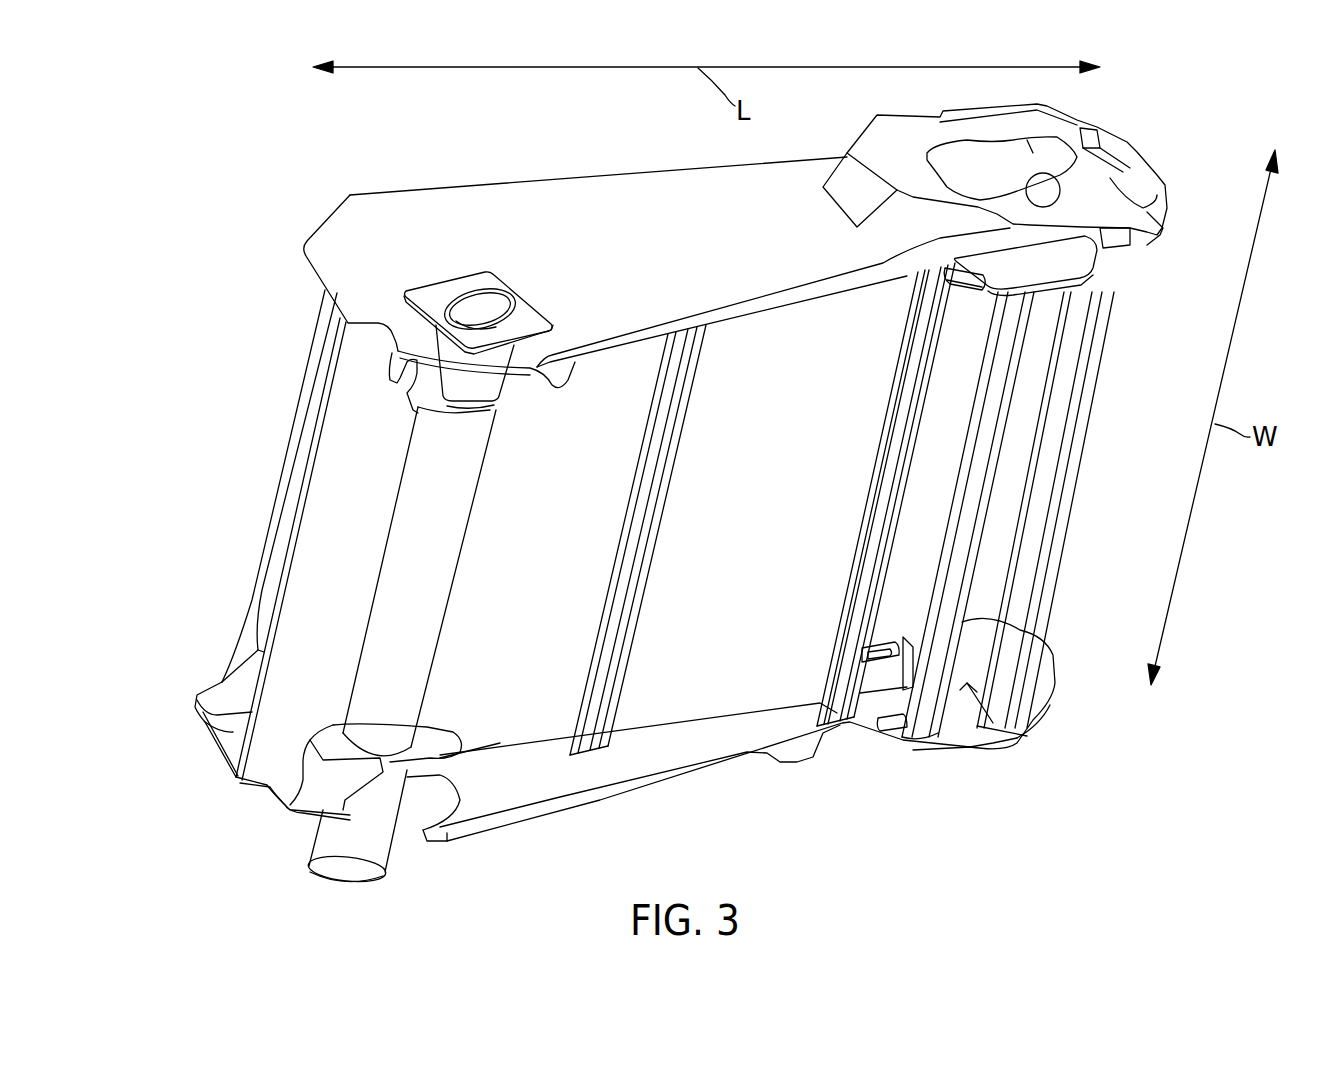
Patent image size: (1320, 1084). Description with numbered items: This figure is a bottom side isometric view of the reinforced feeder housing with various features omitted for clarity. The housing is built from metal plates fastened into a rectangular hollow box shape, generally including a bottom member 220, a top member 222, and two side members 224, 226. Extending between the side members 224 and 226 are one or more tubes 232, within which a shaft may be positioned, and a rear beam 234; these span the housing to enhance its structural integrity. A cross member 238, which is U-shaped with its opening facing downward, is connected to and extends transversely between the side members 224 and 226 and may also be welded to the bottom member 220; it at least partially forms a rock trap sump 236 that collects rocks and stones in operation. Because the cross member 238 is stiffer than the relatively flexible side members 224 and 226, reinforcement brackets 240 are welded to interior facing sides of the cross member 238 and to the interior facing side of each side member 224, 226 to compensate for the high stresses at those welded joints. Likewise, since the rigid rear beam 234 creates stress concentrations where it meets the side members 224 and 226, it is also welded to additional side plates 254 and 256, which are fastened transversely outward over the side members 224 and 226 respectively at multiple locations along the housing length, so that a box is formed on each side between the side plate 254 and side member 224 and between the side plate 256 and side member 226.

The bottom member 220 is at (313, 583).
The top member 222 is at (283, 488).
The side member 224 is at (357, 252).
The side member 226 is at (233, 733).
The tube 232 is at (347, 860).
The rear beam 234 is at (1047, 557).
The rock trap sump 236 is at (907, 537).
The cross member 238 is at (893, 470).
The reinforcement bracket 240 is at (967, 290).
The side plate 254 is at (1117, 198).
The side plate 256 is at (970, 747).